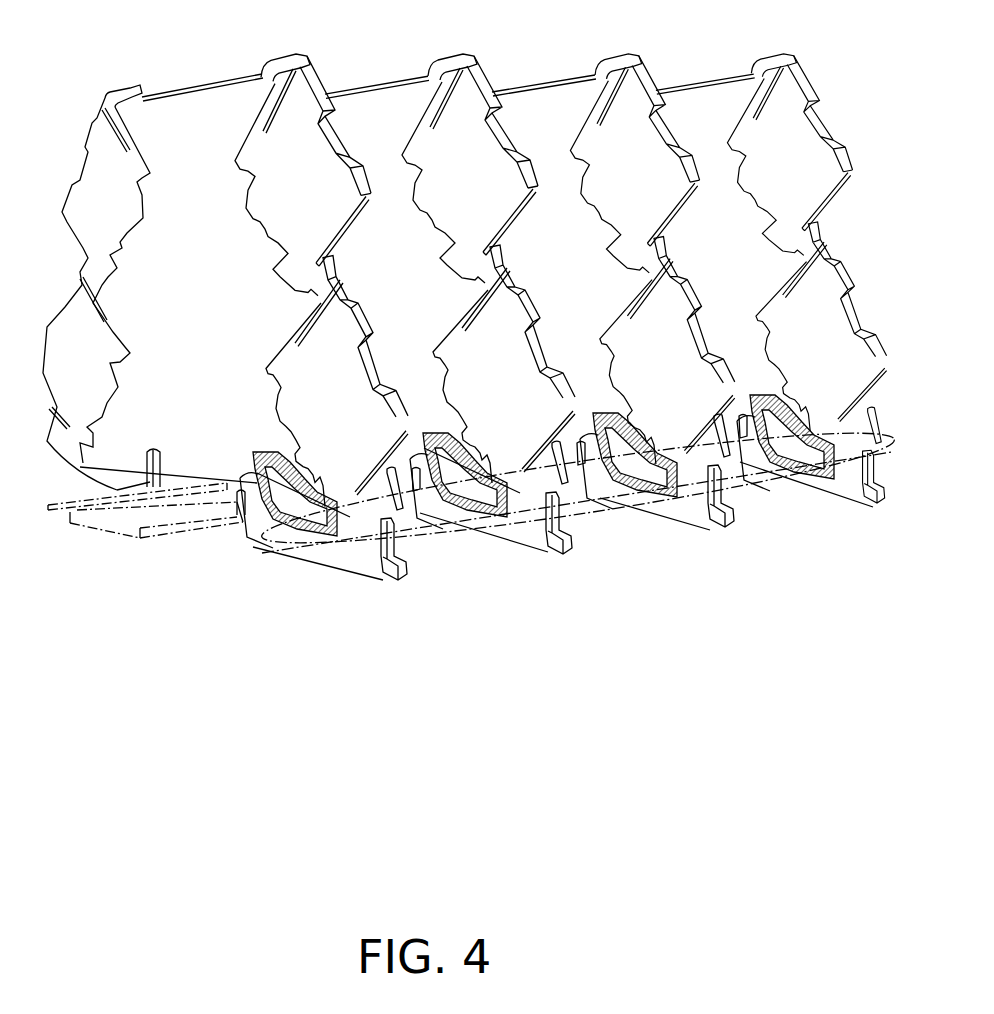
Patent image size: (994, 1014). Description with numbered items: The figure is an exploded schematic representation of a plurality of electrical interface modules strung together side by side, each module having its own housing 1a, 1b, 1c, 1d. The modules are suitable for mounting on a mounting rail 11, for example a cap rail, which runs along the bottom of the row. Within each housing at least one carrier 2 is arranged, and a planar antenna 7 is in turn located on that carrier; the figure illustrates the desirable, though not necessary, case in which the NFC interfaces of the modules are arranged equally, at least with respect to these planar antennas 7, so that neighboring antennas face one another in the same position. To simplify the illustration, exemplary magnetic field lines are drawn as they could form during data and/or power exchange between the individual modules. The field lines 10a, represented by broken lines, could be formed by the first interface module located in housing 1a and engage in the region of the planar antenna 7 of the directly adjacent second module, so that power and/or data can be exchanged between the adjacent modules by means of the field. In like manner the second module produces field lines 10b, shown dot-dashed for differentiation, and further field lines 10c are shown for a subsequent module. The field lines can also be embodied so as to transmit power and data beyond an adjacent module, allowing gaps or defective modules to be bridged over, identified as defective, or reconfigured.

The housing 1a is at (183, 88).
The housing 1b is at (385, 82).
The housing 1c is at (553, 80).
The housing 1d is at (720, 77).
The carrier 2 is at (257, 217).
The antenna (planar) 7 is at (270, 450).
The field lines 10a is at (430, 540).
The field lines 10b is at (613, 512).
The field lines 10c is at (763, 492).
The mounting rail 11 is at (137, 542).